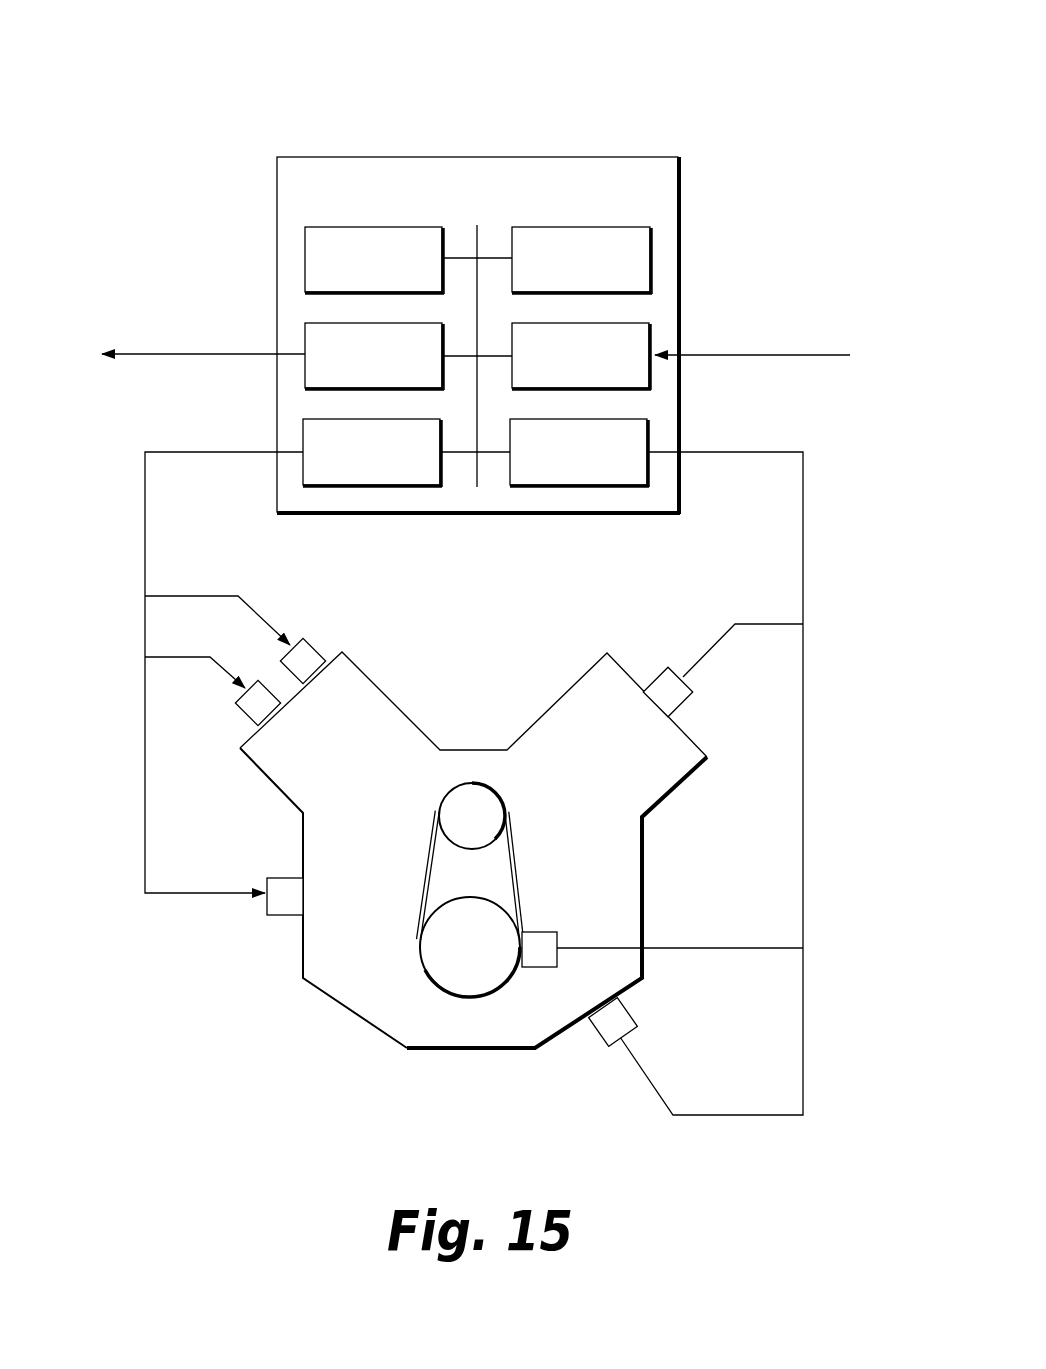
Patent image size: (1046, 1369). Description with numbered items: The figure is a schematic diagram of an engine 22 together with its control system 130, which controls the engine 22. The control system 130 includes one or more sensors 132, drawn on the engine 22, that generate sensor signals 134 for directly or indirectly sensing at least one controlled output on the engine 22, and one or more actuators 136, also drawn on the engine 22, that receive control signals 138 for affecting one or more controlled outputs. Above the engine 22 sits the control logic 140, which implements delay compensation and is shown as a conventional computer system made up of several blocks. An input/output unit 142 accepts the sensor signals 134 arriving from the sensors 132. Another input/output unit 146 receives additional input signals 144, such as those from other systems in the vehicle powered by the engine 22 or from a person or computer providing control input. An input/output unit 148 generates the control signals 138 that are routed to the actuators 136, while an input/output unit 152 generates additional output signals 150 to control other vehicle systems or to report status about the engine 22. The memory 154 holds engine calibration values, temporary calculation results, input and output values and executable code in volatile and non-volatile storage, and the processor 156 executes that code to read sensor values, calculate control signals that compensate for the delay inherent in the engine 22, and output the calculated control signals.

The control system 130 is at (716, 79).
The control logic 140 is at (367, 157).
The processor 156 is at (305, 245).
The memory 154 is at (650, 245).
The input/output unit 152 is at (305, 339).
The input/output unit 146 is at (650, 335).
The input/output unit 148 is at (303, 435).
The input/output unit 142 is at (648, 431).
The additional output signals 150 is at (175, 354).
The additional input signals 144 is at (799, 355).
The control signals 138 is at (145, 550).
The sensor signals 134 is at (805, 553).
The actuators 136 is at (315, 645).
The sensors 132 is at (660, 675).
The engine 22 is at (280, 1080).